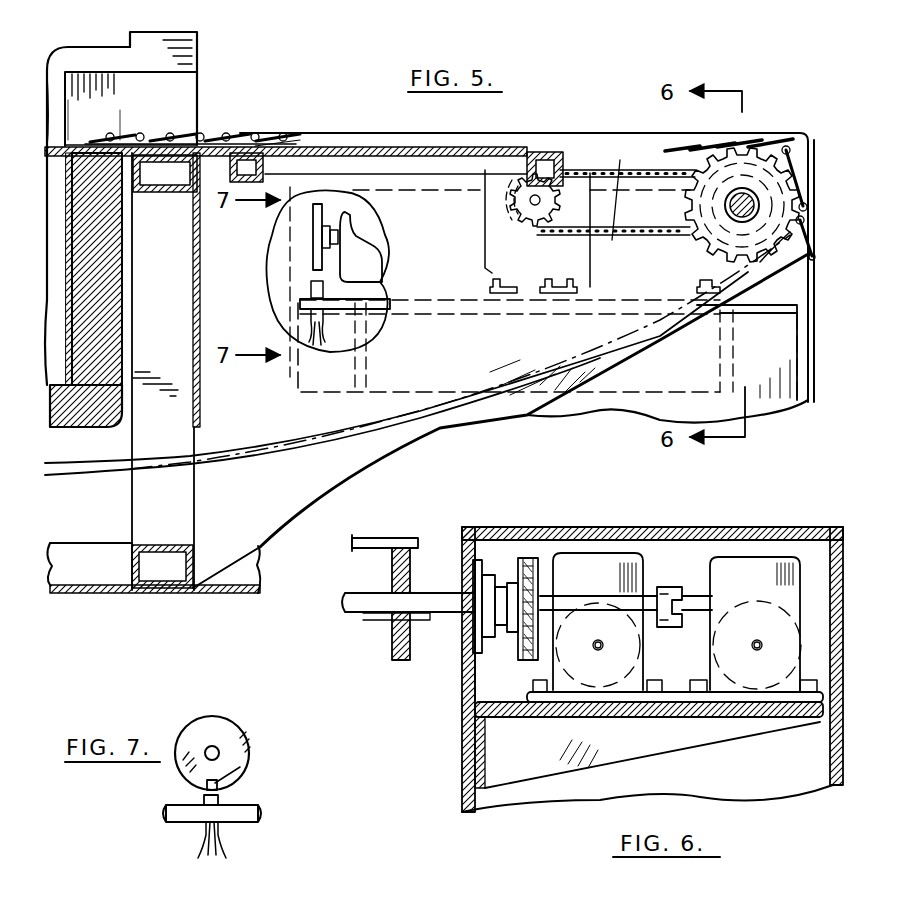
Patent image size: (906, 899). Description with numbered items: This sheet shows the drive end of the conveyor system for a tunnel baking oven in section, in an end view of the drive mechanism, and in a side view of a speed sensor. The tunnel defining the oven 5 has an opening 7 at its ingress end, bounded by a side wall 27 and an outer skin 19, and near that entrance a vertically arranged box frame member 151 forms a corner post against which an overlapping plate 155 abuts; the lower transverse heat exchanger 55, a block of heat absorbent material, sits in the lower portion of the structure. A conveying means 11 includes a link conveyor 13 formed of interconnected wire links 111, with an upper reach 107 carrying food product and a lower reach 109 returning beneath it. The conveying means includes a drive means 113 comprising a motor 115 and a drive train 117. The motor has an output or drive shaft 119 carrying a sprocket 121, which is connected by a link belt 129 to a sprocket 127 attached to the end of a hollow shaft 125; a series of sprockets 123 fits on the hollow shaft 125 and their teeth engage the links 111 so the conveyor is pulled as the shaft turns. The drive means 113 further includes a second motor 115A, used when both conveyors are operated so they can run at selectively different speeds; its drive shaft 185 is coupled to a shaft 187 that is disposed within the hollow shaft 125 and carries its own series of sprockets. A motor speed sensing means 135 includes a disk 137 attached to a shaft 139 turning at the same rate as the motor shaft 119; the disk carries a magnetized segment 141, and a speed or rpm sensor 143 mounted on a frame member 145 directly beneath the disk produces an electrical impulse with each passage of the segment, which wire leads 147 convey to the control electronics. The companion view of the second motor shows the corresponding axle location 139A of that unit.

In FIG. 5, the oven 5 is at (210, 92).
In FIG. 5, the opening at ingress end 7 is at (180, 103).
In FIG. 5, the conveying means 11 is at (835, 160).
In FIG. 6, the conveying means 11 is at (502, 518).
In FIG. 5, the link conveyor 13 is at (272, 132).
In FIG. 6, the link conveyor 13 is at (348, 553).
In FIG. 5, the outer hull skin 19 is at (50, 110).
In FIG. 5, the side wall 27 is at (130, 47).
In FIG. 5, the lower transverse heat exchanger 55 is at (60, 296).
In FIG. 5, the upper reach 107 is at (760, 168).
In FIG. 5, the lower reach 109 is at (383, 428).
In FIG. 5, the wire links 111 is at (216, 136).
In FIG. 6, the wire links 111 is at (355, 543).
In FIG. 5, the drive means 113 is at (424, 192).
In FIG. 6, the drive means 113 is at (677, 556).
In FIG. 5, the motor 115 is at (506, 296).
In FIG. 6, the motor 115 is at (613, 563).
In FIG. 5, the second motor 115A is at (807, 292).
In FIG. 6, the second motor 115A is at (770, 563).
In FIG. 5, the drive train 117 is at (800, 254).
In FIG. 6, the drive train 117 is at (441, 630).
In FIG. 5, the drive shaft 119 is at (522, 212).
In FIG. 5, the sprocket 121 is at (572, 185).
In FIG. 5, the sprockets 123 is at (692, 236).
In FIG. 6, the sprockets 123 is at (407, 660).
In FIG. 5, the hollow shaft 125 is at (783, 162).
In FIG. 6, the hollow shaft 125 is at (390, 622).
In FIG. 5, the sprocket 127 is at (732, 146).
In FIG. 6, the sprocket 127 is at (528, 558).
In FIG. 5, the link belt 129 is at (612, 240).
In FIG. 6, the link belt 129 is at (470, 682).
In FIG. 5, the motor speed sensing means 135 is at (296, 280).
In FIG. 7, the motor speed sensing means 135 is at (254, 732).
In FIG. 5, the disk 137 is at (312, 252).
In FIG. 7, the disk 137 is at (202, 725).
In FIG. 5, the shaft 139 is at (350, 211).
In FIG. 6, the shaft 139 is at (604, 644).
In FIG. 7, the shaft 139 is at (217, 747).
In FIG. 6, the second axle pin 139A is at (763, 644).
In FIG. 7, the magnetized segment 141 is at (250, 766).
In FIG. 5, the speed or rpm sensor 143 is at (310, 322).
In FIG. 7, the speed or rpm sensor 143 is at (200, 798).
In FIG. 5, the frame member 145 is at (372, 318).
In FIG. 6, the frame member 145 is at (747, 715).
In FIG. 7, the frame member 145 is at (258, 814).
In FIG. 5, the wire leads 147 is at (320, 345).
In FIG. 7, the wire leads 147 is at (208, 856).
In FIG. 5, the box frame member 151 is at (196, 498).
In FIG. 5, the plate 155 is at (94, 117).
In FIG. 6, the drive shaft 185 is at (700, 600).
In FIG. 5, the shaft 187 is at (760, 208).
In FIG. 6, the shaft 187 is at (350, 606).